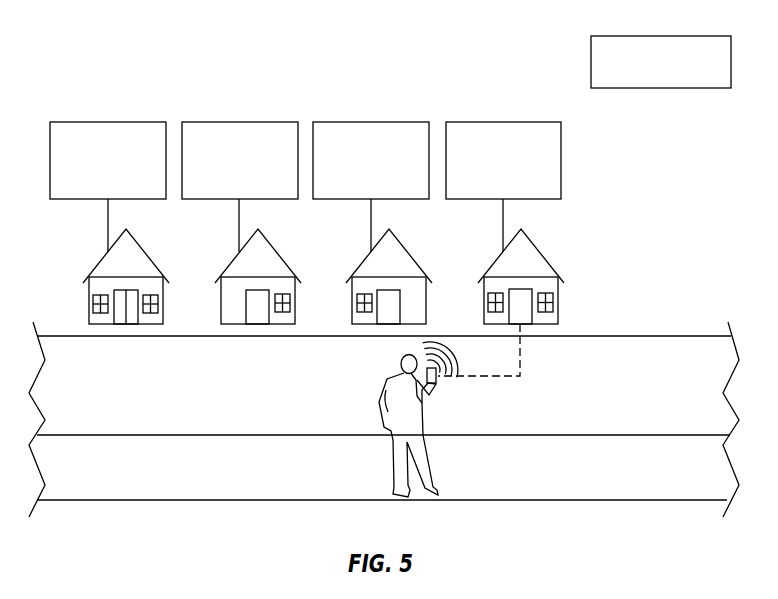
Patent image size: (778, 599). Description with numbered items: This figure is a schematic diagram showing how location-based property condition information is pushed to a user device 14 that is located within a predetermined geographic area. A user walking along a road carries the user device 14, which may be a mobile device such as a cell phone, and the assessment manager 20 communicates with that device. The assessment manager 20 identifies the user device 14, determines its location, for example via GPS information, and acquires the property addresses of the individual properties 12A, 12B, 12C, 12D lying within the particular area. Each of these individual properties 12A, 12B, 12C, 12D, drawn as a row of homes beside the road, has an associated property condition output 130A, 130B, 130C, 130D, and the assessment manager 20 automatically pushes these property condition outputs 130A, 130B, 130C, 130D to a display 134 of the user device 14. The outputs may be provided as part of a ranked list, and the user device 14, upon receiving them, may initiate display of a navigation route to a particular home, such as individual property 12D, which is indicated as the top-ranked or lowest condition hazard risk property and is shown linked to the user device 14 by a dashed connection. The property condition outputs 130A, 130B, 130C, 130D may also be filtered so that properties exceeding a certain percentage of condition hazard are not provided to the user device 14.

The assessment manager 20 is at (662, 35).
The property condition output 130A is at (108, 122).
The property condition output 130B is at (240, 122).
The property condition output 130C is at (372, 122).
The property condition output 130D is at (504, 122).
The individual property 12A is at (147, 254).
The individual property 12B is at (279, 253).
The individual property 12C is at (410, 253).
The individual property 12D is at (542, 253).
The user device 14 is at (437, 374).
The display 134 is at (432, 386).